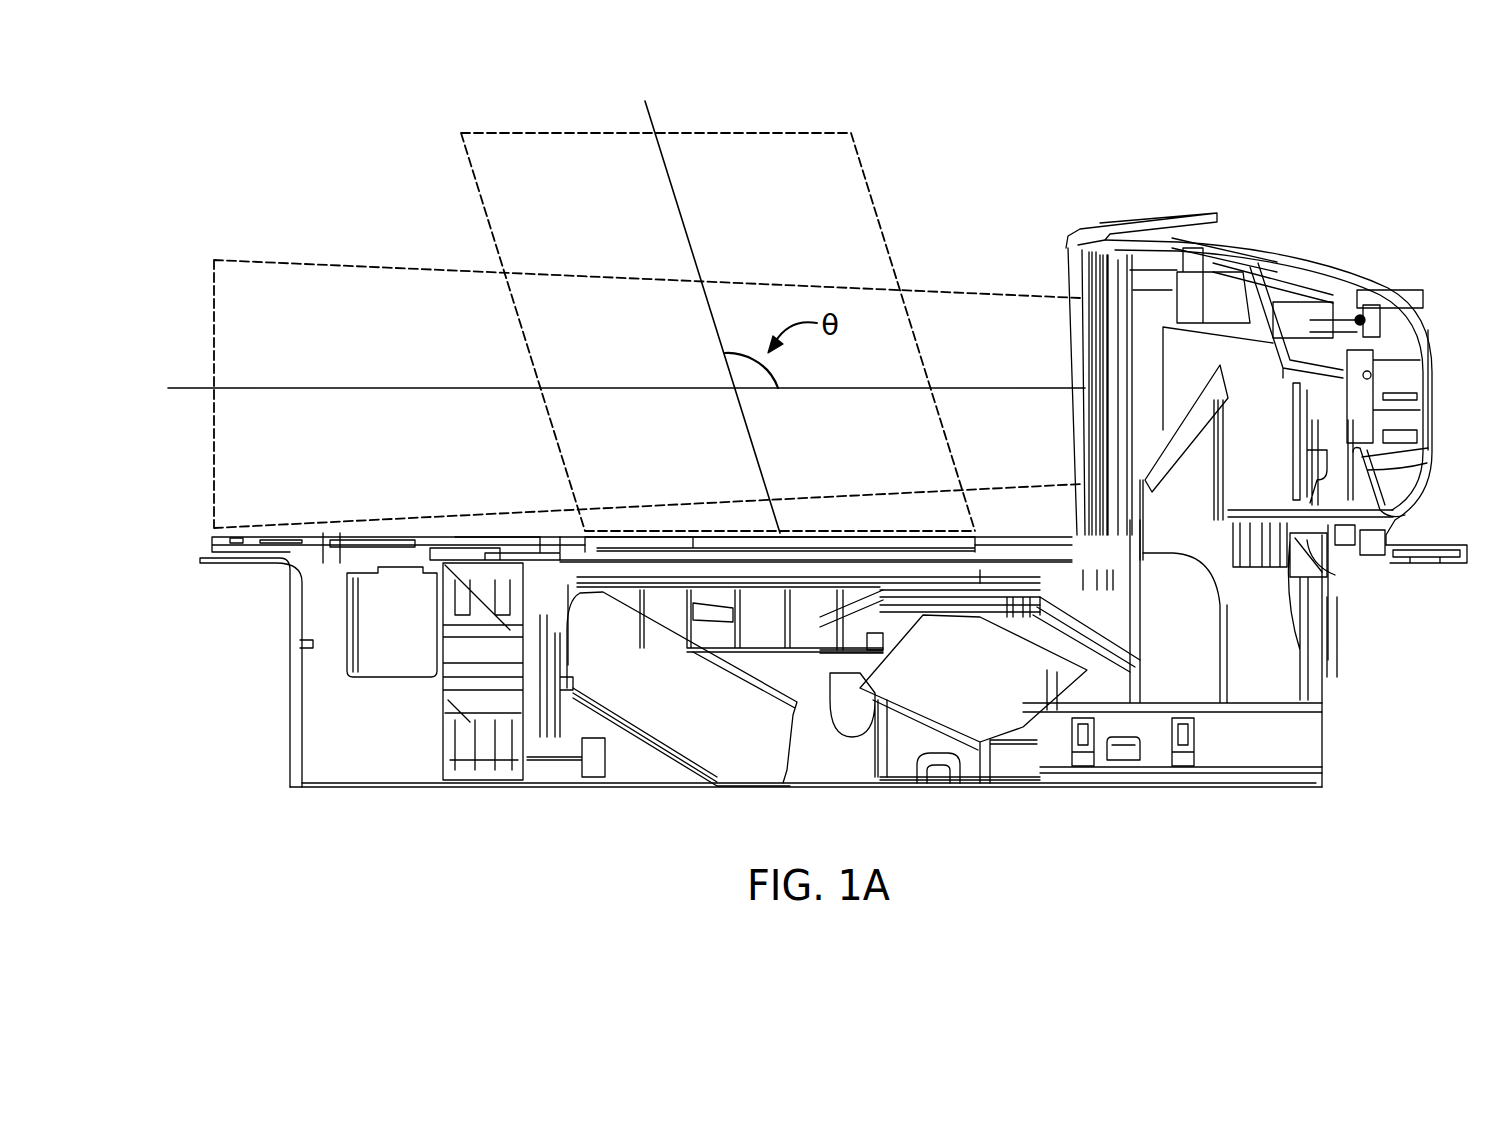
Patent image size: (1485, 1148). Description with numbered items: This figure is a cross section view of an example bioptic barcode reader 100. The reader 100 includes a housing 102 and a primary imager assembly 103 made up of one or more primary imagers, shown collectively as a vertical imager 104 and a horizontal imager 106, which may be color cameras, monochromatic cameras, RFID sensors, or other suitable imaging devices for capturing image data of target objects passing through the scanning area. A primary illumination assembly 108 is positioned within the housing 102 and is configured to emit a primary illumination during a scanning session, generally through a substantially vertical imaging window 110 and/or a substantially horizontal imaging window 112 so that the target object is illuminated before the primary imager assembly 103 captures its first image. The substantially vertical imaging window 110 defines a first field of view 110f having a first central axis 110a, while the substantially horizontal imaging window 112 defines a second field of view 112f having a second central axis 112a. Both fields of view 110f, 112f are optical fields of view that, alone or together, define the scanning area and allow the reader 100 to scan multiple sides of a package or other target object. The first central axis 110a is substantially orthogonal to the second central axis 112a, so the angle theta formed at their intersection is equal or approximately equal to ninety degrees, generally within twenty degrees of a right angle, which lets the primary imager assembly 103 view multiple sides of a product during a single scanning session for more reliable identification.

The bioptic barcode reader 100 is at (194, 449).
The housing 102 is at (1372, 282).
The primary imager assembly 103 is at (1130, 775).
The vertical imager 104 is at (1197, 768).
The horizontal imager 106 is at (1088, 765).
The primary illumination assembly 108 is at (1218, 292).
The substantially vertical imaging window 110 is at (1084, 370).
The first central axis 110a is at (339, 388).
The first field of view 110f is at (339, 260).
The substantially horizontal imaging window 112 is at (697, 542).
The second central axis 112a is at (686, 218).
The second field of view 112f is at (882, 223).